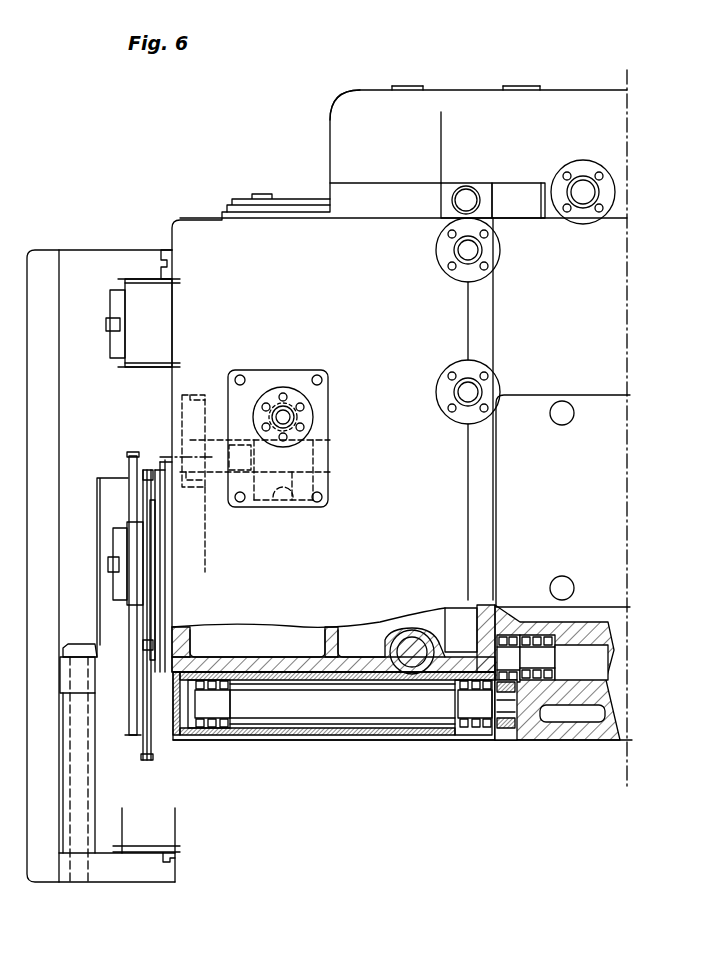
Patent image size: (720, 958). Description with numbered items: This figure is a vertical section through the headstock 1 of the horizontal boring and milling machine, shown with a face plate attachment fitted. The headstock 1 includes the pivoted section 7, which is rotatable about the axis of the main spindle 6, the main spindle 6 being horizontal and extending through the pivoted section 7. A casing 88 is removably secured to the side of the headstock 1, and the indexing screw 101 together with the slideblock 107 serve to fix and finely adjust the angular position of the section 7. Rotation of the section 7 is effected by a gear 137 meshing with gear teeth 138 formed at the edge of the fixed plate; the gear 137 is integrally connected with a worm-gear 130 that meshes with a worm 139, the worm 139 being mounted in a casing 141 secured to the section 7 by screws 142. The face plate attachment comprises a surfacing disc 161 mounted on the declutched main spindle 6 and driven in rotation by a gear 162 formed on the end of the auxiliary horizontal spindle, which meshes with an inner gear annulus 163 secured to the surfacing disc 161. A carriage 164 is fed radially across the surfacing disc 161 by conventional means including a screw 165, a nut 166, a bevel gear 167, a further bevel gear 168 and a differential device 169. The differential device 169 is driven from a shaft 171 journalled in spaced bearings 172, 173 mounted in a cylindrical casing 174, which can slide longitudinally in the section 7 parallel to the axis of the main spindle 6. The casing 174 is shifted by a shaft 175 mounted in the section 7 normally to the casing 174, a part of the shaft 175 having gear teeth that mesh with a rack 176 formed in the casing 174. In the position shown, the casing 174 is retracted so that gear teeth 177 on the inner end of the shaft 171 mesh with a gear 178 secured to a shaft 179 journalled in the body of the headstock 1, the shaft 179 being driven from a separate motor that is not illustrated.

The headstock 1 is at (582, 742).
The main spindle 6 is at (113, 535).
The pivoted section 7 is at (188, 226).
The casing 88 is at (597, 398).
The screw 101 is at (470, 192).
The slideblock 107 is at (331, 120).
The worm-gear 130 is at (304, 471).
The gear 137 is at (190, 450).
The gear teeth 138 is at (182, 396).
The worm 139 is at (290, 408).
The casing 141 is at (329, 400).
The screws 142 is at (323, 380).
The surfacing disc 161 is at (108, 878).
The gear 162 is at (142, 370).
The inner gear annulus 163 is at (160, 846).
The carriage 164 is at (44, 870).
The screw 165 is at (128, 738).
The nut 166 is at (62, 675).
The bevel gear 167 is at (78, 648).
The bevel gear 168 is at (97, 479).
The differential device 169 is at (148, 760).
The shaft 171 is at (356, 720).
The bearing 172 is at (210, 735).
The bearing 173 is at (470, 735).
The cylindrical casing 174 is at (286, 742).
The shaft 175 is at (412, 652).
The rack 176 is at (452, 612).
The gear teeth 177 is at (505, 740).
The gear 178 is at (505, 640).
The shaft 179 is at (588, 656).